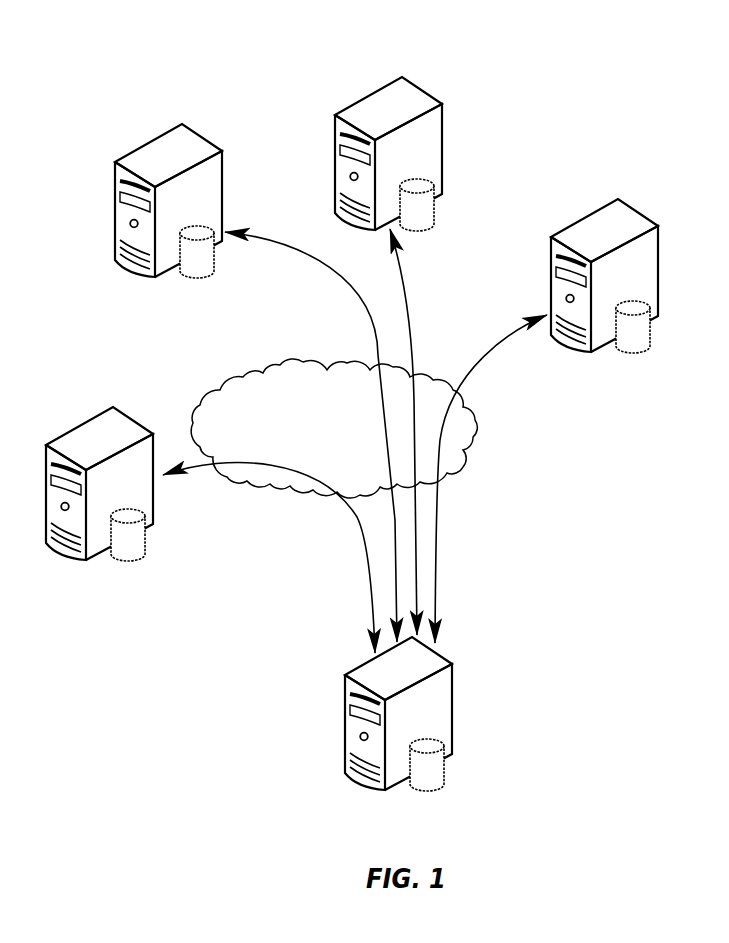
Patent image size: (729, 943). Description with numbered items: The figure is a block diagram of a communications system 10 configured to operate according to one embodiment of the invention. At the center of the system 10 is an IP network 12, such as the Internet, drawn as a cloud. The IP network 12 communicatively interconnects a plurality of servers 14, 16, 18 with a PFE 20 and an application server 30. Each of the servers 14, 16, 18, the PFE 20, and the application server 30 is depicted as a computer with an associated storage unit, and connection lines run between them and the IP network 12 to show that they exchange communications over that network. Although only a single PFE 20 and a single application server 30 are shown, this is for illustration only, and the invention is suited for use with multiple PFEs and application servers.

The communications system 10 is at (596, 89).
The IP network 12 is at (292, 452).
The server 14 is at (178, 145).
The server 16 is at (380, 105).
The server 18 is at (623, 210).
The PFE 20 is at (433, 693).
The application server 30 is at (105, 432).